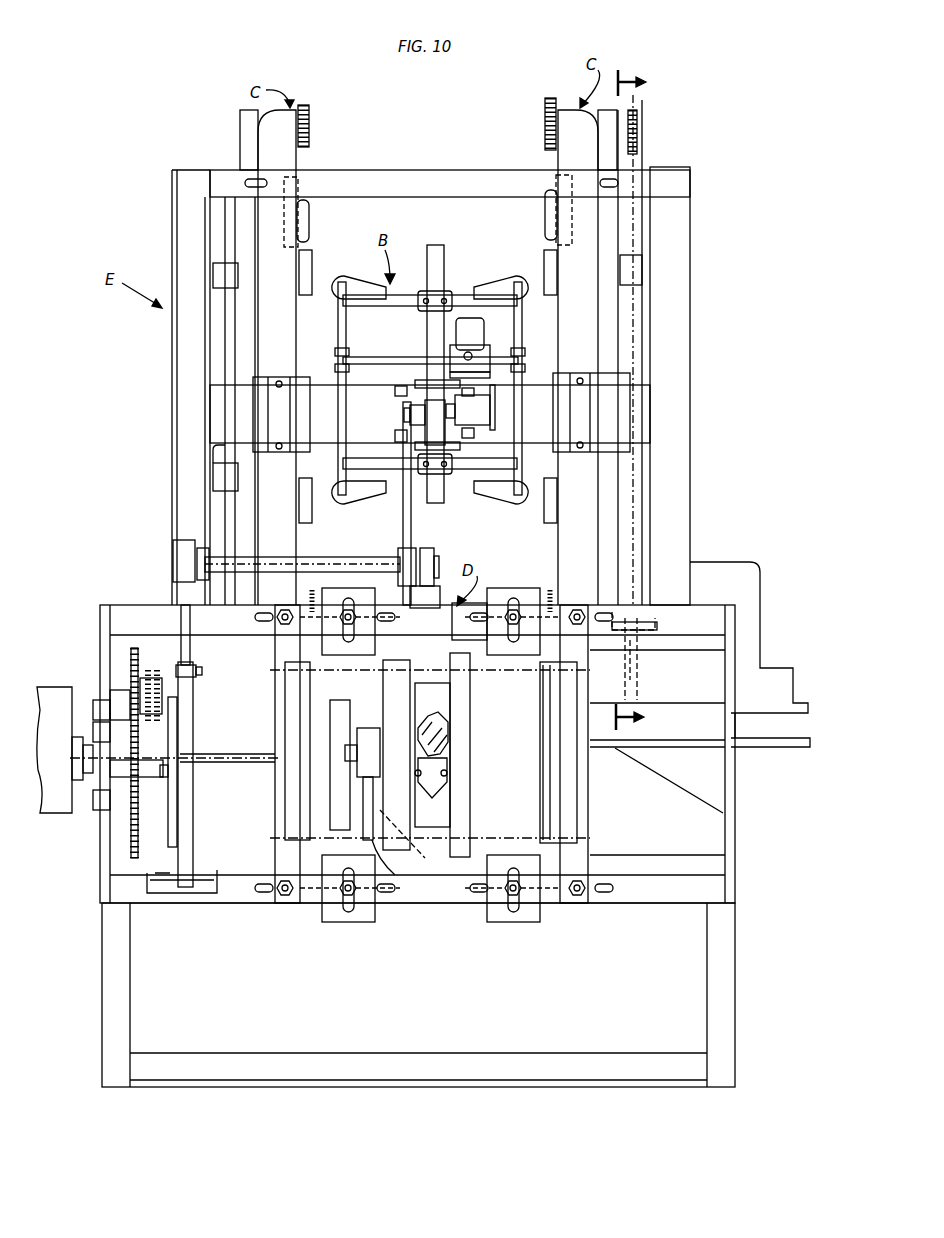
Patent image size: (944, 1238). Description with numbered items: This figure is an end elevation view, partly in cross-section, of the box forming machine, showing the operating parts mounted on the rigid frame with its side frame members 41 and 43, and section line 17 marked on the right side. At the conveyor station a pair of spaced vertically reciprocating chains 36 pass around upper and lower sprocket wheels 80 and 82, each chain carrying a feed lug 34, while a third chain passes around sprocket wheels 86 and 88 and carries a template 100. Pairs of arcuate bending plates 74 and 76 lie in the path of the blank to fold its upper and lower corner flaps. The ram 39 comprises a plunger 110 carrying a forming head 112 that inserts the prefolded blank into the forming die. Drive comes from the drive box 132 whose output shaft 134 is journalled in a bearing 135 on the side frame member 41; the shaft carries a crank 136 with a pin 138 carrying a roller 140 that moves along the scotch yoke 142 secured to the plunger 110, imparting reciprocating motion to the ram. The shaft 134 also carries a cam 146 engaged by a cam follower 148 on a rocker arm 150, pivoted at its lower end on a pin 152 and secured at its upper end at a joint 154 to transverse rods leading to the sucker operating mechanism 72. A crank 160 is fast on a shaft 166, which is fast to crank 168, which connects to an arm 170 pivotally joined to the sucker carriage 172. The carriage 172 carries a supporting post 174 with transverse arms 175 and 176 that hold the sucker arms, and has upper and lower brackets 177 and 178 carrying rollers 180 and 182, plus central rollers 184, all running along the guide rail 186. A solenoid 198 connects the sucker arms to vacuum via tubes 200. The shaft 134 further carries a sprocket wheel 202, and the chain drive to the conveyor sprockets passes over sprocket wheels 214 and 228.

The section line 17- 17 is at (643, 400).
The feed lug 34 is at (310, 228).
The conveyor chain 36 is at (300, 163).
The ram 39 is at (460, 765).
The side frame member 41 is at (100, 626).
The side frame member 43 is at (735, 792).
The sucker operating mechanism 72 is at (418, 346).
The arcuate bending plate 74 is at (314, 262).
The arcuate bending plate 76 is at (313, 506).
The upper sprocket wheel 80 is at (312, 110).
The lower sprocket wheel 82 is at (313, 592).
The upper sprocket wheel 86 is at (640, 128).
The lower sprocket wheel 88 is at (652, 670).
The template 100 is at (642, 332).
The plunger 110 is at (449, 740).
The forming head 112 is at (450, 697).
The drive box 132 is at (58, 812).
The output shaft 134 is at (228, 752).
The bearing 135 is at (95, 697).
The crank 136 is at (365, 820).
The pin 138 is at (394, 874).
The roller 140 is at (428, 848).
The scotch yoke 142 is at (385, 702).
The cam 146 is at (172, 835).
The cam follower 148 is at (175, 768).
The rocker arm 150 is at (188, 712).
The pin 152 is at (160, 897).
The joint 154 is at (188, 668).
The crank 160 is at (185, 612).
The shaft 166 is at (326, 563).
The crank 168 is at (403, 510).
The arm 170 is at (410, 414).
The sucker carriage 172 is at (426, 433).
The supporting post 174 is at (438, 252).
The transverse arm 175 is at (393, 298).
The transverse arm 176 is at (462, 480).
The upper bracket 177 is at (432, 382).
The lower bracket 178 is at (450, 456).
The roller 180 is at (415, 388).
The roller 182 is at (420, 446).
The roller 184 is at (458, 412).
The guide rail 186 is at (487, 418).
The solenoid 198 is at (478, 336).
The tube 200 is at (340, 328).
The sprocket wheel 202 is at (132, 846).
The sprocket wheel 214 is at (156, 668).
The sprocket wheel 228 is at (165, 790).